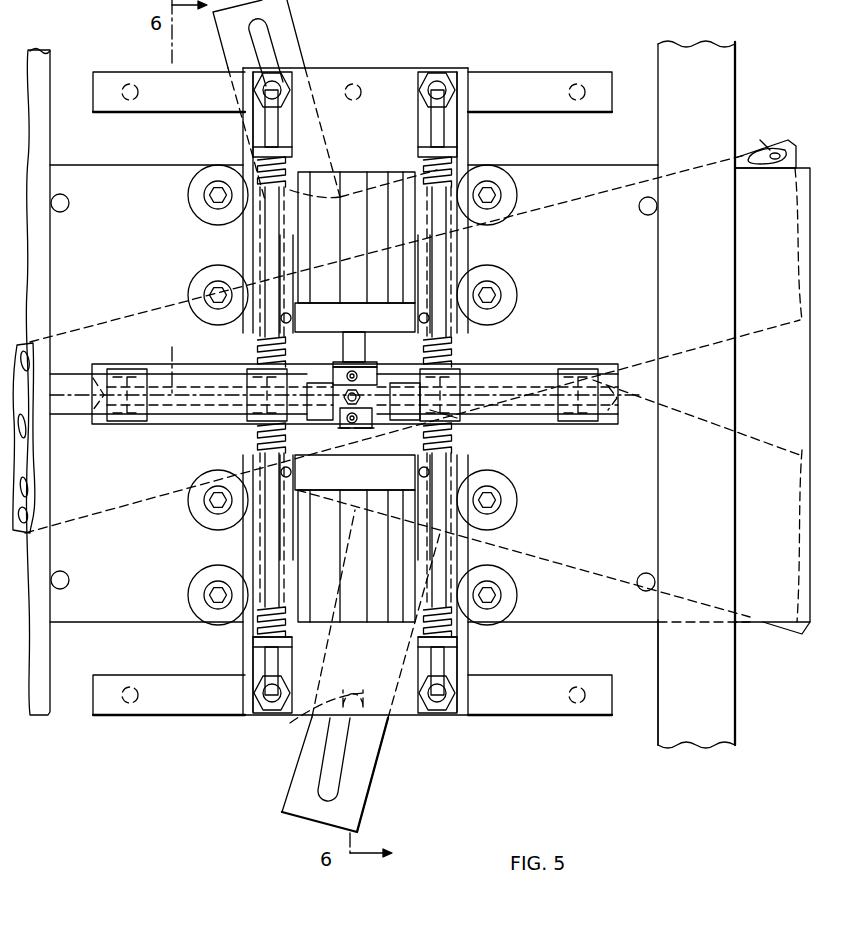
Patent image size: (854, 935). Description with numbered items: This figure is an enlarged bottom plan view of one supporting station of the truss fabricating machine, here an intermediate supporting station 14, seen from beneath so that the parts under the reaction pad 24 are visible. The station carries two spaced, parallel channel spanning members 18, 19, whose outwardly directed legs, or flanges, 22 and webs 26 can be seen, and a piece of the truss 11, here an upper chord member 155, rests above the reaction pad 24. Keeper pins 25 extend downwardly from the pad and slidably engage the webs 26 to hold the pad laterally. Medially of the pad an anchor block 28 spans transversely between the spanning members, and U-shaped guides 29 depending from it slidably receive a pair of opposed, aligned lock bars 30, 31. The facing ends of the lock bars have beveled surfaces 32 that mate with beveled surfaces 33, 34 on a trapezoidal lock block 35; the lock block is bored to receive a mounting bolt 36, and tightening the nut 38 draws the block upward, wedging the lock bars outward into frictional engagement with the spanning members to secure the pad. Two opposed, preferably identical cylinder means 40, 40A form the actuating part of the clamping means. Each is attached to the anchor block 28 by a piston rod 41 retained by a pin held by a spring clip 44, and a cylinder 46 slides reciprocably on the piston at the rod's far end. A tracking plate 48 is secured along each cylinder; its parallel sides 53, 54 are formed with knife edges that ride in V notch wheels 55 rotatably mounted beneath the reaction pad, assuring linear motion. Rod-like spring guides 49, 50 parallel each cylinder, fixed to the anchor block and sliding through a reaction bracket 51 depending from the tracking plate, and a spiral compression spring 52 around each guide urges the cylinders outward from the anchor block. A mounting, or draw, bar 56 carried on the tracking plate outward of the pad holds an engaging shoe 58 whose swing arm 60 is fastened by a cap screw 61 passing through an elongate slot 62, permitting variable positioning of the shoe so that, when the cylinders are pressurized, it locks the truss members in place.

The truss 11 is at (764, 140).
The intermediate supporting station 14 is at (262, 820).
The upper spanning member 18 is at (707, 740).
The upper spanning member 19 is at (33, 717).
The outwardly directed legs or flanges 22 is at (733, 713).
The reaction pad 24 is at (608, 274).
The keeper pins 25 is at (62, 212).
The web 26 is at (655, 713).
The anchor block (anchor plate) 28 is at (533, 370).
The U-shaped guides 29 is at (115, 372).
The lock bar 30 is at (640, 387).
The lock bar 31 is at (78, 405).
The beveled surface 32 is at (387, 420).
The beveled surface 33 is at (263, 387).
The beveled surface 34 is at (458, 416).
The trapezoidal lock block 35 is at (345, 383).
The mounting bolt 36 is at (345, 378).
The tightening nut 38 is at (358, 393).
The cylinder means 40 is at (370, 168).
The cylinder means 40A is at (347, 628).
The piston rod 41 is at (352, 340).
The spring clip 44 is at (363, 362).
The cylinder 46 is at (315, 612).
The tracking plate 48 is at (413, 62).
The spring guide 49 is at (267, 123).
The spring guide 50 is at (443, 133).
The reaction bracket (abutting tab) 51 is at (457, 152).
The spiral compression spring 52 is at (460, 170).
The parallel side of tracking plate 53 is at (245, 238).
The parallel side of tracking plate 54 is at (463, 257).
The V notch wheels 55 is at (195, 190).
The mounting bar (draw bar) 56 is at (585, 80).
The engaging shoe 58 is at (312, 50).
The swing arm 60 is at (355, 775).
The cap screw 61 is at (308, 715).
The elongate slot 62 is at (268, 40).
The upper chord member 155 is at (748, 152).